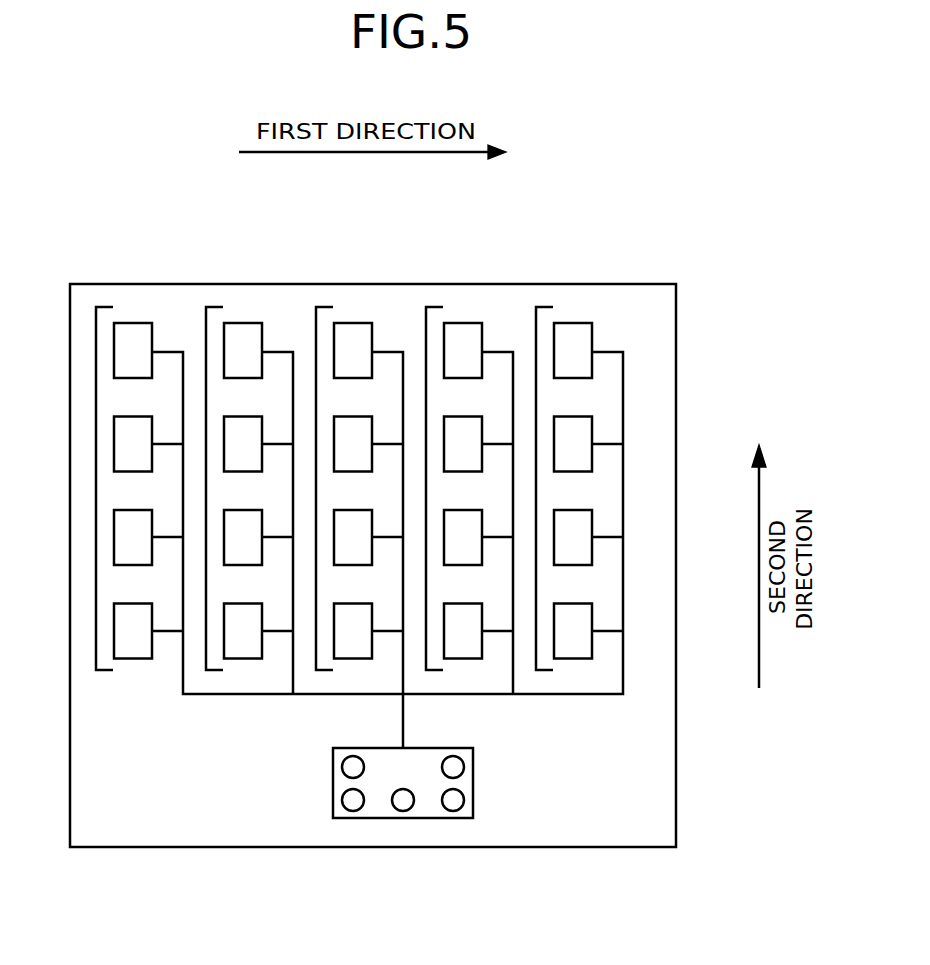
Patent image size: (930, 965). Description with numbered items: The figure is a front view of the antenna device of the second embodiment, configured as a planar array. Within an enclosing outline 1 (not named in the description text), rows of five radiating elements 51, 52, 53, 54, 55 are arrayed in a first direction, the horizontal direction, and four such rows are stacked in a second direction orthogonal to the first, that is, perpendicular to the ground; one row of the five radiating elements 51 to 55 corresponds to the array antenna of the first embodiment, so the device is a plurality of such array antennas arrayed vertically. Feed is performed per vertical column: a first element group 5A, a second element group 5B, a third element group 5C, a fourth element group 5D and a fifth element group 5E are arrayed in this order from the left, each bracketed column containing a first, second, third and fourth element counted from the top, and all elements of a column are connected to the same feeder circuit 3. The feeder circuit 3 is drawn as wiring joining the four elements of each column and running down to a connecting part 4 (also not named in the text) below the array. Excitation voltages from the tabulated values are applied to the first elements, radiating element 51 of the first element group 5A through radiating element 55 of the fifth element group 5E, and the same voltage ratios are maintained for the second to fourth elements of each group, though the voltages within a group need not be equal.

The substrate 1 is at (70, 566).
The feeder circuit 3 is at (242, 695).
The connector 4 is at (400, 819).
The first element group 5A is at (112, 434).
The second element group 5B is at (224, 434).
The third element group 5C is at (332, 434).
The fourth element group 5D is at (441, 434).
The fifth element group 5E is at (554, 434).
The radiating element 51 is at (130, 323).
The radiating element 52 is at (240, 323).
The radiating element 53 is at (350, 323).
The radiating element 54 is at (460, 323).
The radiating element 55 is at (570, 323).